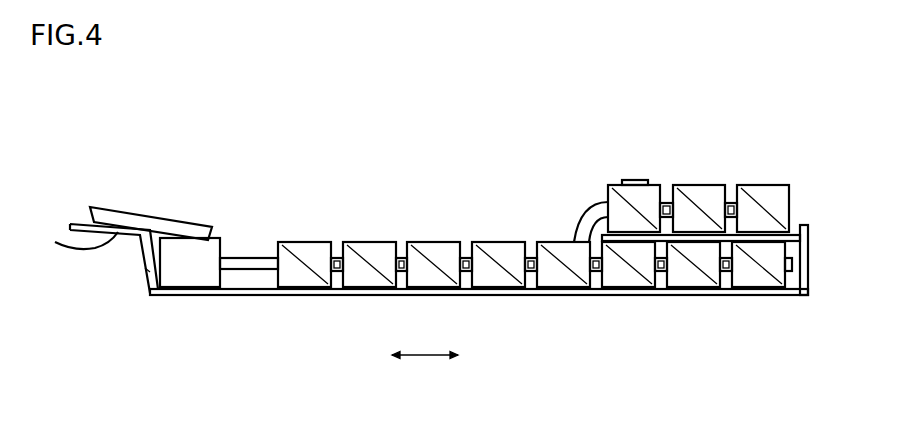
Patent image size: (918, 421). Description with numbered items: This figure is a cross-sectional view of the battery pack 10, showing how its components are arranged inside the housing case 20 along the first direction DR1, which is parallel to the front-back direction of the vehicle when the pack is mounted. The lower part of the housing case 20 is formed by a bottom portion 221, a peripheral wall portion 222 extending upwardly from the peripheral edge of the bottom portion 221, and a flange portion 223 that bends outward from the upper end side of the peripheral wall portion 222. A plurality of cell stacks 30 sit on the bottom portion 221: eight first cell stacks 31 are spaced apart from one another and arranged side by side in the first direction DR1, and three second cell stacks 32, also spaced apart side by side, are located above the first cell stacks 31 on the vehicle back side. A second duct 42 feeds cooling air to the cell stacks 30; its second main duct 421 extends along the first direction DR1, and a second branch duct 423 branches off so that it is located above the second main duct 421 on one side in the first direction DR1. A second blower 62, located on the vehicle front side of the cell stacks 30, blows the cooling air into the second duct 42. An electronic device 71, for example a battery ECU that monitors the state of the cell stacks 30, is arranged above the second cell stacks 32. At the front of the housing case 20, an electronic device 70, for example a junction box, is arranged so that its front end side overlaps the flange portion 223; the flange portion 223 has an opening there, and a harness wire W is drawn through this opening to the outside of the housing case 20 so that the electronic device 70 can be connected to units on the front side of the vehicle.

The battery pack 10 is at (820, 148).
The housing case 20 is at (120, 283).
The bottom portion 221 is at (253, 291).
The peripheral wall portion 222 is at (808, 258).
The flange portion 223 is at (99, 222).
The cell stacks 30 is at (304, 267).
The first cell stacks 31 is at (535, 269).
The second cell stacks 32 is at (701, 173).
The second duct 42 is at (247, 257).
The second main duct 421 is at (247, 216).
The second branch duct 423 is at (600, 202).
The second blower 62 is at (192, 270).
The electronic device 70 is at (158, 228).
The electronic device 71 is at (637, 185).
The harness wire W is at (73, 252).
The first direction DR1 is at (427, 358).